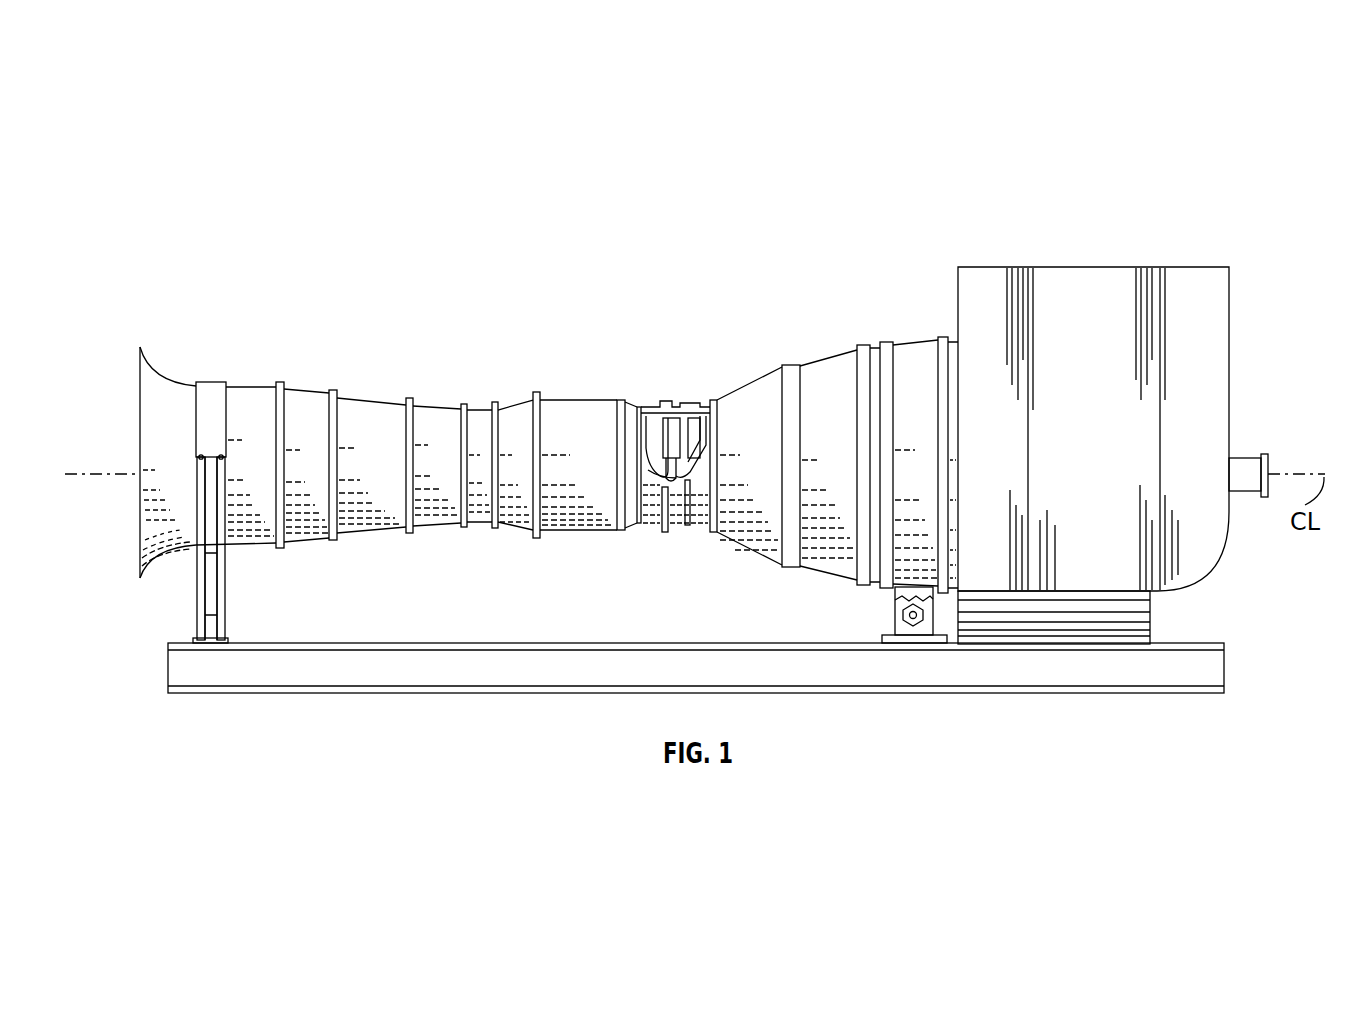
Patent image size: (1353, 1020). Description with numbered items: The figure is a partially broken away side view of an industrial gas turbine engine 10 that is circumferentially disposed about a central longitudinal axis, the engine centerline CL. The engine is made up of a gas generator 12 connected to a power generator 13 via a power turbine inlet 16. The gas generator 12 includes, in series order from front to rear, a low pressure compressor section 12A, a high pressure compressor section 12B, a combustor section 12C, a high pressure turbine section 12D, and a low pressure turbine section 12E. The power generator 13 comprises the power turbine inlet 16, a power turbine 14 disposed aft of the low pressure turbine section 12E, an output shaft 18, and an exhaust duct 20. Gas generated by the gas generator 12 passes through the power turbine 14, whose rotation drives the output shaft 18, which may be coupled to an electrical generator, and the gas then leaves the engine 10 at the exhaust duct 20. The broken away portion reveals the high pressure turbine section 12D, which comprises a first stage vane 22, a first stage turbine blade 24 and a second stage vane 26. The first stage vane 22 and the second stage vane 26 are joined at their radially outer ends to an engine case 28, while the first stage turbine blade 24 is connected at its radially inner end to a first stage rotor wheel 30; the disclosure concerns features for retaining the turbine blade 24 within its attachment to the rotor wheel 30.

The gas turbine engine 10 is at (159, 153).
The gas generator 12 is at (782, 342).
The low pressure compressor section 12A is at (257, 407).
The high pressure compressor section 12B is at (484, 421).
The combustor section 12C is at (598, 445).
The high pressure turbine section 12D is at (683, 540).
The low pressure turbine section 12E is at (762, 395).
The power generator 13 is at (1342, 247).
The power turbine 14 is at (927, 446).
The power turbine inlet 16 is at (848, 353).
The output shaft 18 is at (1268, 463).
The exhaust duct 20 is at (1093, 461).
The first stage vane 22 is at (649, 427).
The first stage turbine blade 24 is at (673, 426).
The second stage vane 26 is at (695, 420).
The engine case 28 is at (666, 404).
The first stage rotor wheel 30 is at (667, 472).